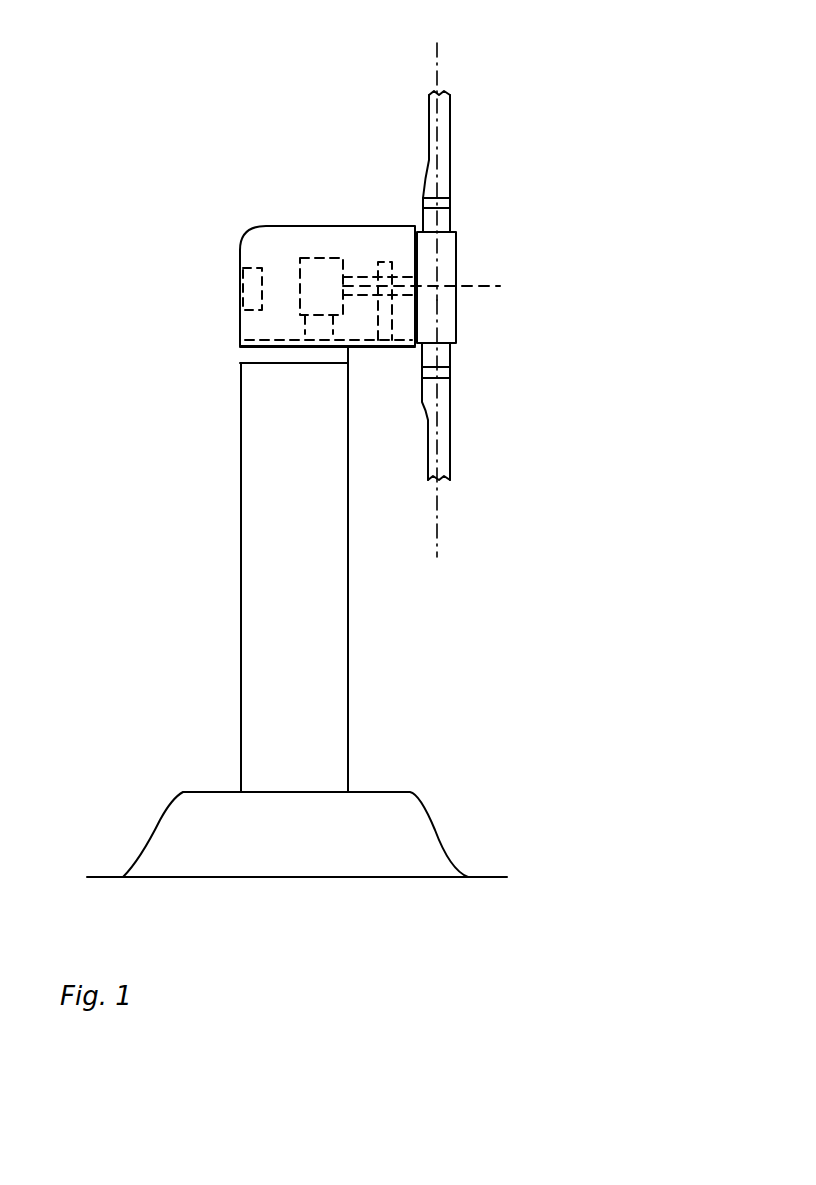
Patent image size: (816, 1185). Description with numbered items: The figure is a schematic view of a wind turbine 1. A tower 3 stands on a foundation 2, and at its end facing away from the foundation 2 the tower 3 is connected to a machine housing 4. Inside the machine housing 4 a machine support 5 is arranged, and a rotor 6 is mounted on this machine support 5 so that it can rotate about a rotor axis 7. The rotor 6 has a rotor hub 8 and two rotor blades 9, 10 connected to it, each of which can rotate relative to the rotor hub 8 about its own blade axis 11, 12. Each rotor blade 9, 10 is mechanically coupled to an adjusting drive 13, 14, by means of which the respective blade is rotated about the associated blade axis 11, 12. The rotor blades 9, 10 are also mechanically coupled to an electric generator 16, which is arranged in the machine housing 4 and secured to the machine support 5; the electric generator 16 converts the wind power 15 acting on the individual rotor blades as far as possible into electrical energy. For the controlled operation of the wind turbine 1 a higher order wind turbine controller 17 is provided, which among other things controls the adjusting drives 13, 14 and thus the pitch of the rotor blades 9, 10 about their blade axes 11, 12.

The wind turbine 1 is at (137, 95).
The foundation 2 is at (160, 826).
The tower 3 is at (258, 600).
The machine housing 4 is at (280, 226).
The machine support 5 is at (250, 334).
The rotor 6 is at (470, 240).
The rotor axis 7 is at (500, 287).
The rotor hub 8 is at (458, 325).
The rotor blade 9 is at (452, 437).
The rotor blade 10 is at (428, 120).
The blade axis 11 is at (440, 520).
The blade axis 12 is at (437, 48).
The adjusting drive 13 is at (450, 370).
The adjusting drive 14 is at (423, 202).
The wind power 15 is at (635, 148).
The electric generator 16 is at (310, 258).
The wind turbine controller 17 is at (248, 266).